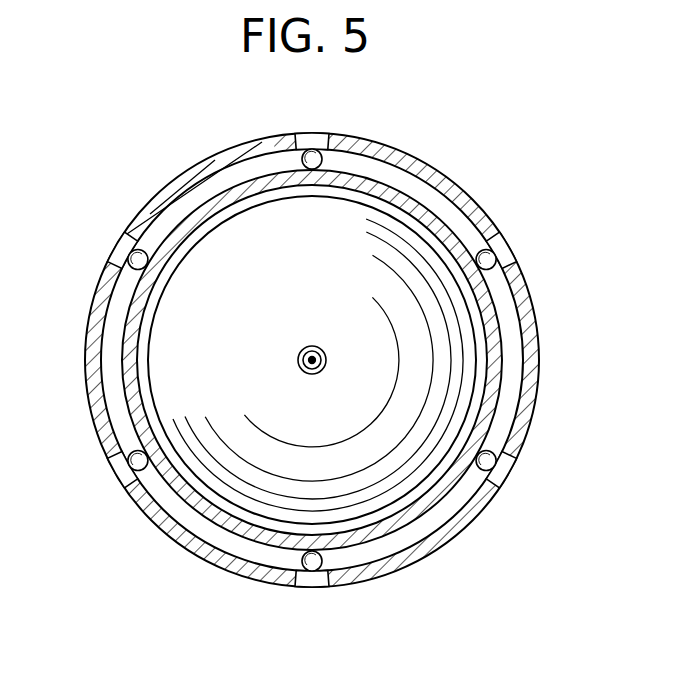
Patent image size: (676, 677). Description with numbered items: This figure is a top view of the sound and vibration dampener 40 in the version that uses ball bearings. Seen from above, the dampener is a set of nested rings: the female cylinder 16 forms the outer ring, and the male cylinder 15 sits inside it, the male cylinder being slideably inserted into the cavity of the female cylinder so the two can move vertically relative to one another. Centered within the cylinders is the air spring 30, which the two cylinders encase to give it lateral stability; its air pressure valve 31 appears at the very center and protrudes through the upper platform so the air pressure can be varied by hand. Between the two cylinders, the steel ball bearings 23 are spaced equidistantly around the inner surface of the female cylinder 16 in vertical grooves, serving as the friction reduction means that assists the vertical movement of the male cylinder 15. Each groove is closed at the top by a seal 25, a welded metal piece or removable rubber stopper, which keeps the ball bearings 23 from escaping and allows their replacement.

The sound and vibration dampener 40 is at (320, 332).
The female cylinder 16 is at (535, 342).
The male cylinder 15 is at (113, 330).
The steel ball bearings 23 is at (299, 154).
The seal 25 is at (113, 257).
The air spring 30 is at (318, 290).
The air pressure valve 31 is at (298, 358).